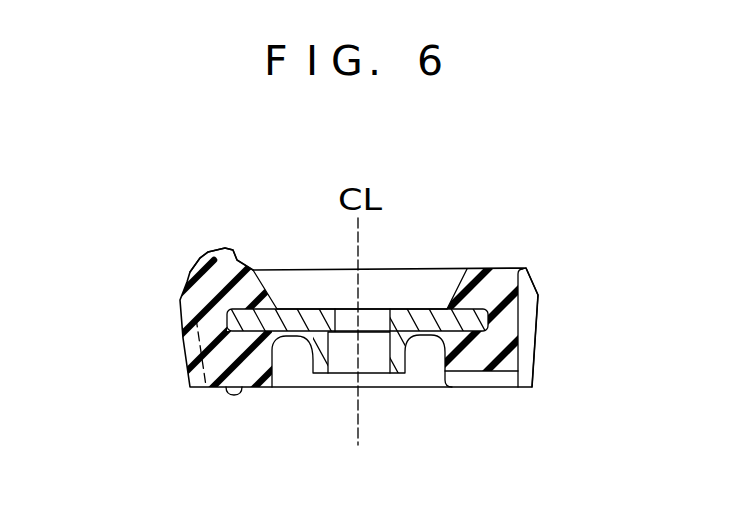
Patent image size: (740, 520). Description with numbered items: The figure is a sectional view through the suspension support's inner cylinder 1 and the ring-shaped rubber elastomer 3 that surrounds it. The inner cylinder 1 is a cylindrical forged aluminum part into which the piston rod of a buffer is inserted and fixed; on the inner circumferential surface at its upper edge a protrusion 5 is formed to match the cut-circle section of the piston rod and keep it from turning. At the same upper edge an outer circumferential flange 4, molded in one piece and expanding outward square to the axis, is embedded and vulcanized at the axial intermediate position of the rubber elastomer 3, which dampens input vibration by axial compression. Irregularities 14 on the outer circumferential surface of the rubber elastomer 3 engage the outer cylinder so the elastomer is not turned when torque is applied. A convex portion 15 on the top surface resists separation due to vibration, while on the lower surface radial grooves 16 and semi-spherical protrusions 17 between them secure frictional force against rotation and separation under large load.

The inner cylinder 1 is at (393, 300).
The rubber elastomer 3 is at (500, 257).
The outer circumferential flange 4 is at (432, 328).
The protrusion 5 is at (333, 309).
The irregularities 14 is at (191, 337).
The convex portion 15 is at (216, 250).
The radial grooves 16 is at (487, 377).
The semi-spherical protrusions 17 is at (237, 393).